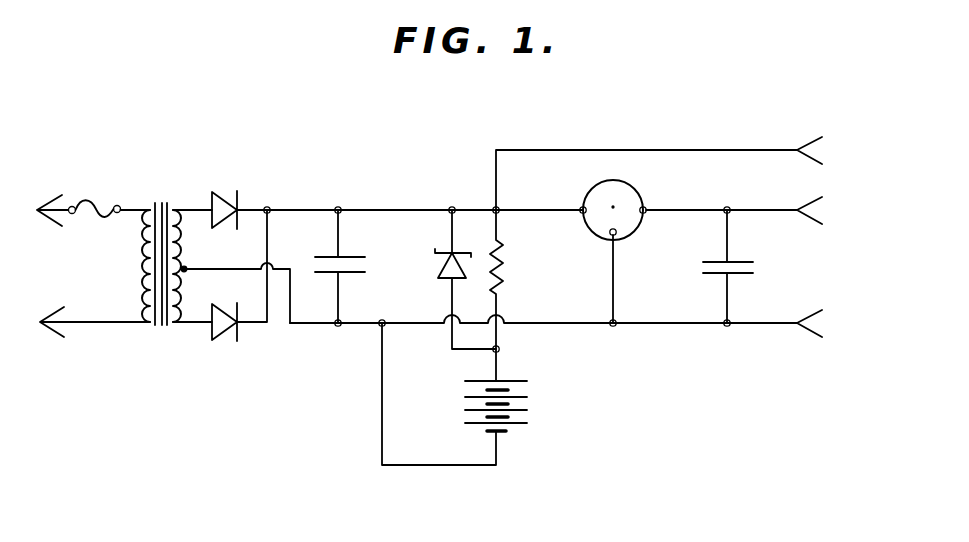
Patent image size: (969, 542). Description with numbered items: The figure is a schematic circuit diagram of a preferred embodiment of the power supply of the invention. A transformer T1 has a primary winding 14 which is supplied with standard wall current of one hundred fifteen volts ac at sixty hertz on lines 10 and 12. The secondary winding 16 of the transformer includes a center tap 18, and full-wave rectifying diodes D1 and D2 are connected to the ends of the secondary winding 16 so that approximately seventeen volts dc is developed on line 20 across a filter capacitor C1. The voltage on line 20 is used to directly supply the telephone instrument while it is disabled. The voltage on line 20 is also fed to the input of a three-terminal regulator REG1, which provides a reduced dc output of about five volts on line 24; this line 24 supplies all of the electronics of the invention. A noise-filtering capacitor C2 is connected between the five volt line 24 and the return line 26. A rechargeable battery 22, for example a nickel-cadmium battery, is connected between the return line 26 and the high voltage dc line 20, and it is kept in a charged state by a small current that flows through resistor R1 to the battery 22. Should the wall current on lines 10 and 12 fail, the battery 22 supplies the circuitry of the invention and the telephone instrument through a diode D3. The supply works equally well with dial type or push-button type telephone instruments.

The line 10 is at (65, 207).
The line 12 is at (72, 320).
The primary winding 14 is at (146, 260).
The secondary winding 16 is at (183, 218).
The center tap 18 is at (188, 271).
The line 20 is at (383, 208).
The rechargeable battery 22 is at (517, 424).
The line 24 is at (753, 208).
The return line 26 is at (758, 328).
The transformer T1 is at (163, 323).
The full-wave rectifying diode D1 is at (223, 192).
The full-wave rectifying diode D2 is at (225, 339).
The diode D3 is at (443, 262).
The filter capacitor C1 is at (350, 258).
The noise-filtering capacitor C2 is at (737, 275).
The resistor R1 is at (505, 260).
The three-terminal regulator REG1 is at (652, 246).